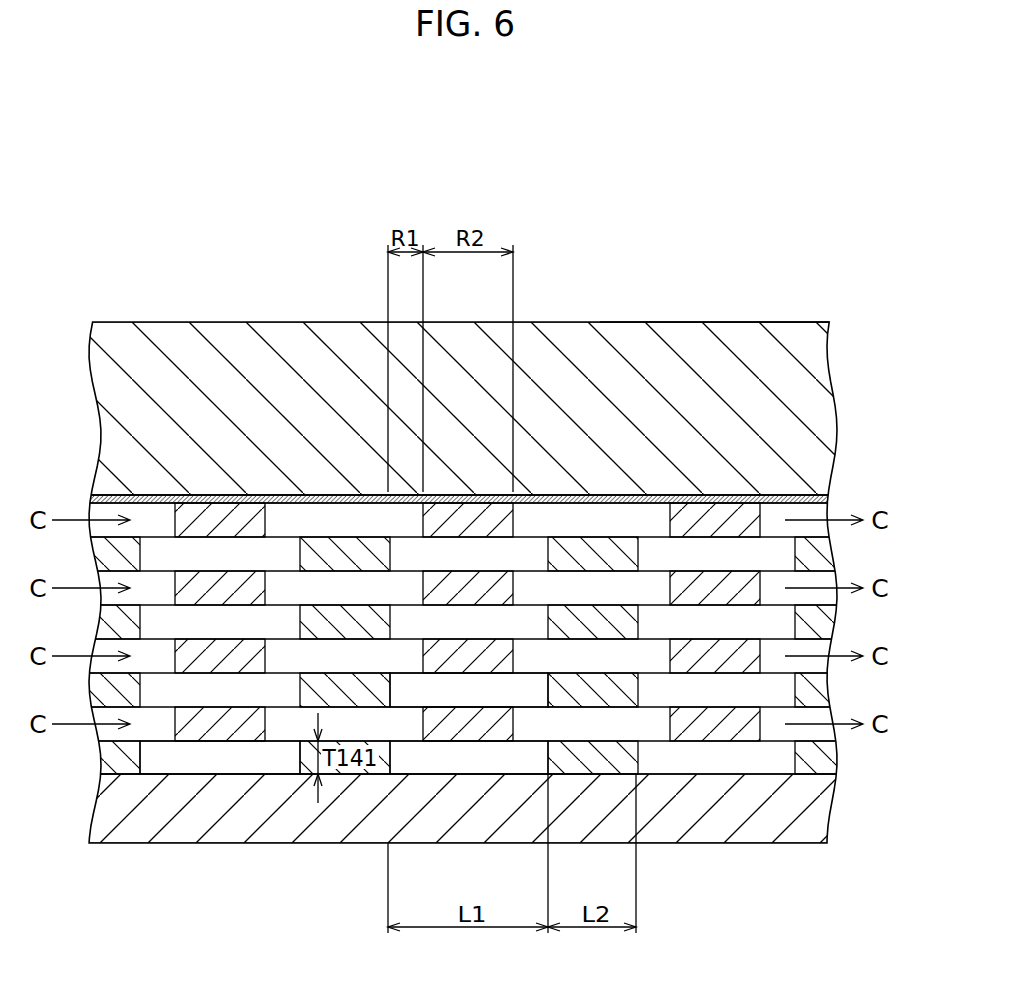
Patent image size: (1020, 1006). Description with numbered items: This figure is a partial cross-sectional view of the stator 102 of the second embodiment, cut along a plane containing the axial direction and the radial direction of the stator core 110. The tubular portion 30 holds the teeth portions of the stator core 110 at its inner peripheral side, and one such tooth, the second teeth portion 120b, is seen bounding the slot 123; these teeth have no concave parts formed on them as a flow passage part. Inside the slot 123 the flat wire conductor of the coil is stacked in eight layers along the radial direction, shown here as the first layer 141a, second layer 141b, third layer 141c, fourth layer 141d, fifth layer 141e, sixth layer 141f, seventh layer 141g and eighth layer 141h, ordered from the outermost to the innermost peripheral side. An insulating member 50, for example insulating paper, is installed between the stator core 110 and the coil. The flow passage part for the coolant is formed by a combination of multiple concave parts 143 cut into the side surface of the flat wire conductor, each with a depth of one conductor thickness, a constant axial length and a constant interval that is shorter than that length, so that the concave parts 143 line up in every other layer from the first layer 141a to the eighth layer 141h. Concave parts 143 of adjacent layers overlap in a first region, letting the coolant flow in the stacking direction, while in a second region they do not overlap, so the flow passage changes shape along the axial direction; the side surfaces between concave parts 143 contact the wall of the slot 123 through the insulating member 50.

The stator 102 is at (470, 519).
The stator core 110 is at (625, 320).
The tubular portion 30 is at (755, 322).
The insulating member 50 is at (782, 496).
The first layer 141a is at (192, 522).
The second layer 141b is at (622, 550).
The third layer 141c is at (192, 590).
The fourth layer 141d is at (622, 618).
The fifth layer 141e is at (192, 658).
The sixth layer 141f is at (622, 684).
The seventh layer 141g is at (200, 727).
The eighth layer 141h is at (622, 752).
The slot 123 is at (178, 755).
The concave part 143 is at (462, 687).
The second teeth portion 120b is at (793, 845).